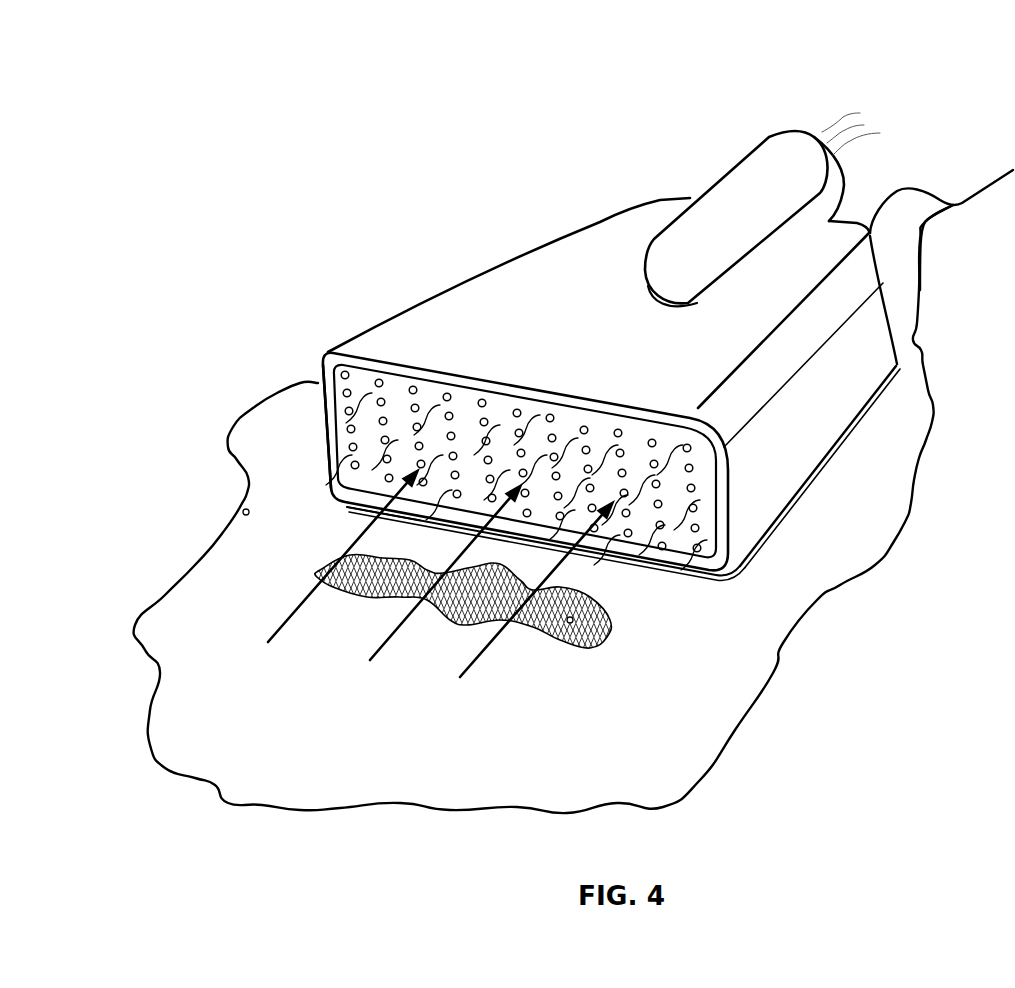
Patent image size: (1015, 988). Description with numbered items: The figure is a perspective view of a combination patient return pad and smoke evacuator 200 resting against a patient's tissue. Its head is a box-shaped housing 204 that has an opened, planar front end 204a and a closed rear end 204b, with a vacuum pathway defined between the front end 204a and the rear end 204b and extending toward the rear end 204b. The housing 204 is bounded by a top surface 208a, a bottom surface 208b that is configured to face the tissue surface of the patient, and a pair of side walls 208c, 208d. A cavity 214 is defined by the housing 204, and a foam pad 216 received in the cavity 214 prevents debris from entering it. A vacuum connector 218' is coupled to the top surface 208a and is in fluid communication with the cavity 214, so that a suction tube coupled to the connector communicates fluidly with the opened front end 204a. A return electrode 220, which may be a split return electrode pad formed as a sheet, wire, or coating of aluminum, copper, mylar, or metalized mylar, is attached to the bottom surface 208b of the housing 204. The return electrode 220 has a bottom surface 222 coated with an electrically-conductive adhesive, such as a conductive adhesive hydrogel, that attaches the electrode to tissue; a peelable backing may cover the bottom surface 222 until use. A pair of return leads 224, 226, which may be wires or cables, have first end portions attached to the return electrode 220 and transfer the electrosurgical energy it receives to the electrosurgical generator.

The combination patient return pad and smoke evacuator 200 is at (589, 91).
The housing 204 is at (420, 300).
The front end 204a is at (735, 548).
The rear end 204b is at (670, 198).
The top surface 208a is at (378, 345).
The bottom surface 208b is at (813, 480).
The side wall 208c is at (323, 430).
The side wall 208d is at (840, 398).
The cavity 214 is at (695, 566).
The pad 216 is at (337, 498).
The vacuum connector 218' is at (762, 185).
The return electrode 220 is at (853, 452).
The bottom surface 222 is at (736, 582).
The return lead 224 is at (904, 186).
The return lead 226 is at (922, 240).